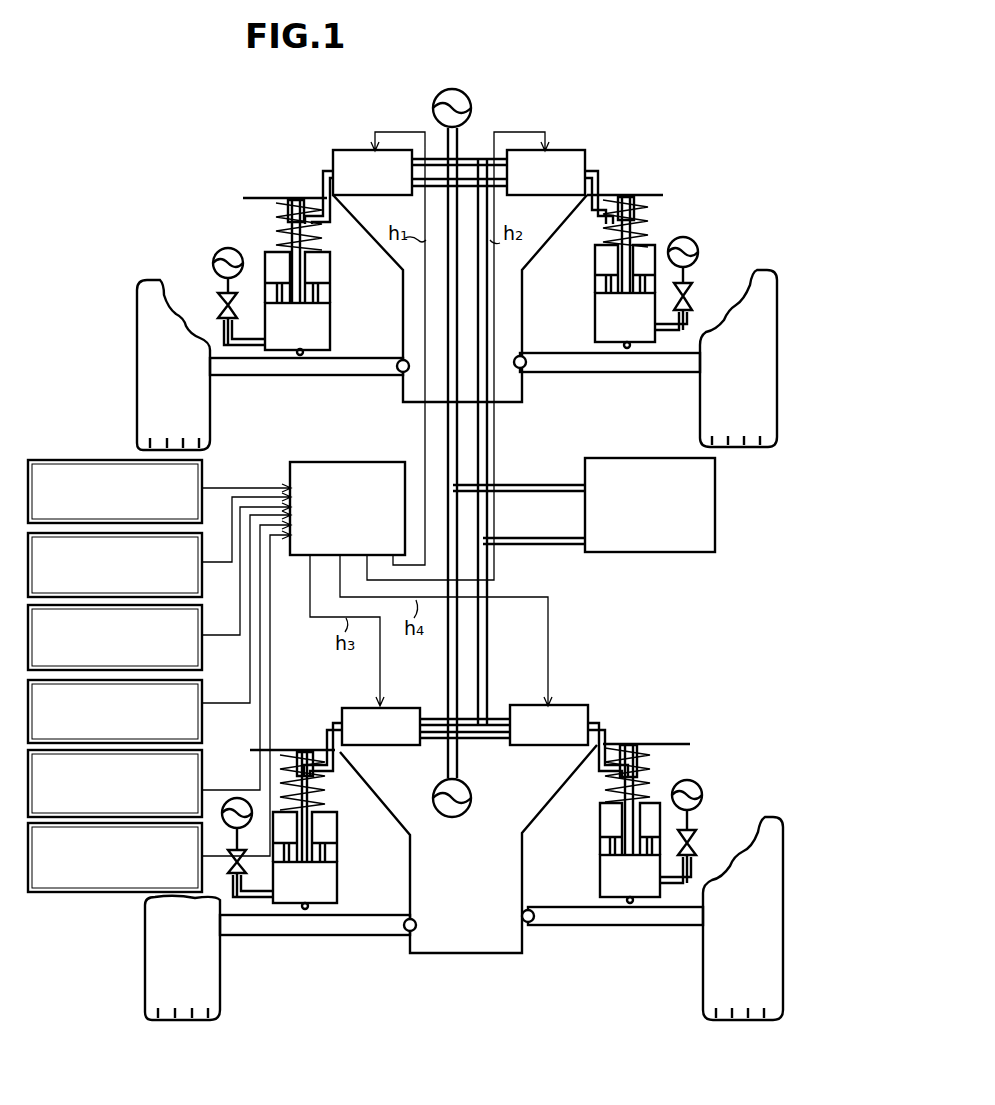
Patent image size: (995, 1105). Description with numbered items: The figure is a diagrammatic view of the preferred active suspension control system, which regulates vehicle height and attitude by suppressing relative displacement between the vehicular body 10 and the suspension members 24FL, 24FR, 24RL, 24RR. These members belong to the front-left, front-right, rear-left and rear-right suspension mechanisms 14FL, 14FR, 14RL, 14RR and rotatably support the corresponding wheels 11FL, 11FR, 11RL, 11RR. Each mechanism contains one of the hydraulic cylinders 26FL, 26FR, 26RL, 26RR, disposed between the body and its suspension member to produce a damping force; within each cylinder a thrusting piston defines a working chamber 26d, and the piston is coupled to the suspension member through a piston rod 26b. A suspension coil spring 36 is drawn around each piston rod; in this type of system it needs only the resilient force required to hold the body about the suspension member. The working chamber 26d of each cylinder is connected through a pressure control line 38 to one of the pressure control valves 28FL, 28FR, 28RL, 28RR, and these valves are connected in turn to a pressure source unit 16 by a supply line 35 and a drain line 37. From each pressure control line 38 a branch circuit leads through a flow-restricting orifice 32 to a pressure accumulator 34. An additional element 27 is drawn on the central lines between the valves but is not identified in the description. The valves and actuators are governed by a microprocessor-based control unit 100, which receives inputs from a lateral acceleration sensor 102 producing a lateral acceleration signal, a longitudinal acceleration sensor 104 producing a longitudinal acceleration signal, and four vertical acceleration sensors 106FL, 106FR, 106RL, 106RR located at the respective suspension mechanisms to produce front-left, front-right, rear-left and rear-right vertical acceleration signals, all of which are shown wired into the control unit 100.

The vehicular body 10 is at (528, 402).
The front-left wheel 11FL is at (137, 340).
The front-right wheel 11FR is at (702, 430).
The rear-left wheel 11RL is at (145, 979).
The rear-right wheel 11RR is at (706, 996).
The front-left suspension mechanism 14FL is at (338, 300).
The front-right suspension mechanism 14FR is at (588, 297).
The rear-left suspension mechanism 14RL is at (338, 880).
The rear-right suspension mechanism 14RR is at (600, 858).
The pressure source unit 16 is at (716, 517).
The front-left suspension member 24FL is at (302, 376).
The front-right suspension member 24FR is at (598, 374).
The rear-left suspension member 24RL is at (360, 938).
The rear-right suspension member 24RR is at (626, 928).
The front-left hydraulic cylinder 26FL is at (332, 334).
The front-right hydraulic cylinder 26FR is at (595, 330).
The rear-left hydraulic cylinder 26RL is at (338, 892).
The rear-right hydraulic cylinder 26RR is at (600, 889).
The piston rod 26b is at (330, 272).
The working chamber 26d is at (316, 345).
The accumulator 27 is at (460, 88).
The front-left pressure control valve 28FL is at (348, 150).
The front-right pressure control valve 28FR is at (566, 150).
The rear-left pressure control valve 28RL is at (418, 708).
The rear-right pressure control valve 28RR is at (510, 705).
The orifice 32 is at (216, 312).
The pressure accumulator 34 is at (214, 256).
The supply line 35 is at (548, 485).
The suspension coil spring 36 is at (276, 222).
The drain line 37 is at (548, 538).
The pressure control line 38 is at (325, 172).
The control unit 100 is at (356, 460).
The lateral acceleration sensor 102 is at (62, 460).
The longitudinal acceleration sensor 104 is at (208, 568).
The front-left vertical acceleration sensor 106FL is at (204, 662).
The front-right vertical acceleration sensor 106FR is at (204, 684).
The rear-left vertical acceleration sensor 106RL is at (205, 748).
The rear-right vertical acceleration sensor 106RR is at (120, 893).